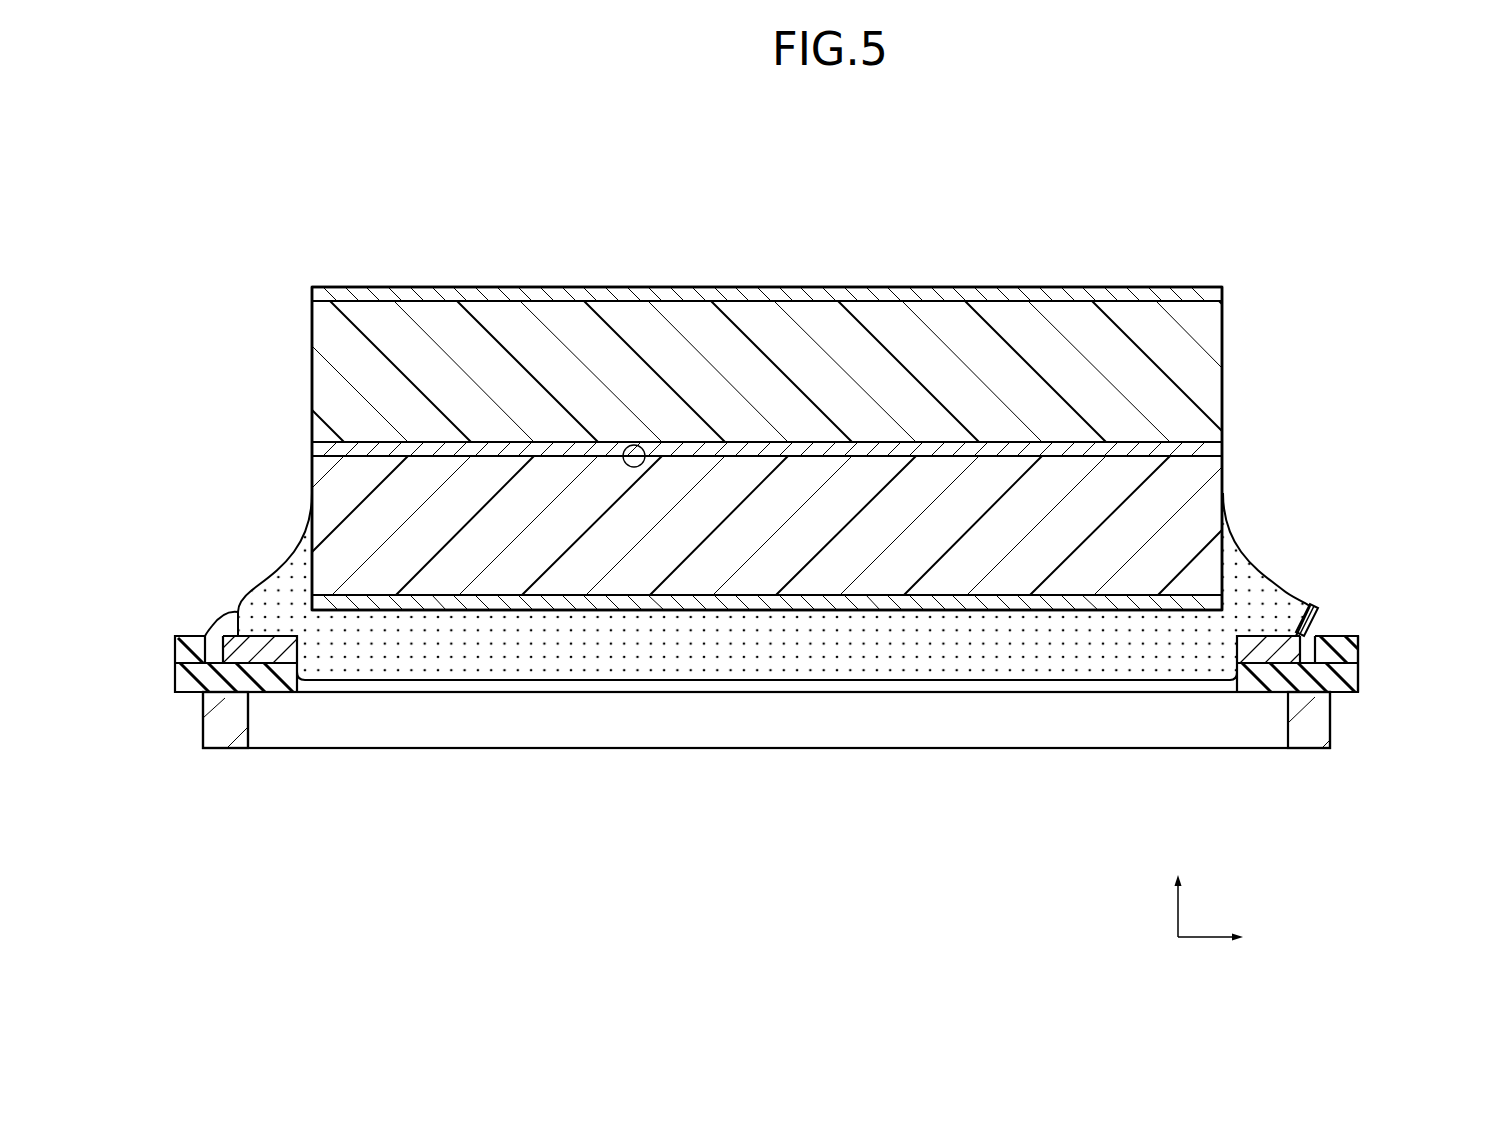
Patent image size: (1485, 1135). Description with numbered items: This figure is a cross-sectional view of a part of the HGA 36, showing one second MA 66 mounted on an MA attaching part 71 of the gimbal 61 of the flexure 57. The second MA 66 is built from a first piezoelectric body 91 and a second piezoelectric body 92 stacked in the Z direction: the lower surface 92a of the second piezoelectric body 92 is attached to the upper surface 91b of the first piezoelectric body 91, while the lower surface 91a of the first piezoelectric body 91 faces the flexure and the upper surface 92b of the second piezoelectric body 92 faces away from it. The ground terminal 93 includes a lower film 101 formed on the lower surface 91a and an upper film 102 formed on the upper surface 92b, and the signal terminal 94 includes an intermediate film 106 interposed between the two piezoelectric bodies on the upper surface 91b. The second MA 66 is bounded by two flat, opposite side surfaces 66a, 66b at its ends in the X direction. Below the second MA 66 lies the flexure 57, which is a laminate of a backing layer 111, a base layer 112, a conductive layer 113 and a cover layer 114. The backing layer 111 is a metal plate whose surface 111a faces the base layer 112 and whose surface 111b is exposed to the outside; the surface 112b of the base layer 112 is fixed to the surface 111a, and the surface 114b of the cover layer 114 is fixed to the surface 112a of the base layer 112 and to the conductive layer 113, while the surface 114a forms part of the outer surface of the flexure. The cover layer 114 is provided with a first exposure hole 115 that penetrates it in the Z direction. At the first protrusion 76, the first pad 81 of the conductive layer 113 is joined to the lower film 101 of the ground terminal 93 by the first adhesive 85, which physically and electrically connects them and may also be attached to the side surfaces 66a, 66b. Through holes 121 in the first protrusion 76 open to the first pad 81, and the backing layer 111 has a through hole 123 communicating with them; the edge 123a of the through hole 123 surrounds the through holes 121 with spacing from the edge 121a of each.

The HGA 36 is at (272, 118).
The second MA 66 is at (915, 282).
The side surface 66a is at (1225, 320).
The side surface 66b is at (310, 320).
The second piezoelectric body 92 is at (742, 345).
The lower surface 92a is at (633, 445).
The upper surface 92b is at (527, 302).
The ground terminal 93 is at (767, 248).
The upper film 102 is at (845, 295).
The signal terminal 94 is at (764, 325).
The intermediate film 106 is at (430, 445).
The first piezoelectric body 91 is at (1115, 485).
The lower surface 91a is at (992, 601).
The upper surface 91b is at (1018, 440).
The lower film 101 is at (790, 600).
The first adhesive 85 is at (278, 587).
The first pad 81 is at (227, 580).
The conductive layer 113 is at (265, 636).
The backing layer 111 is at (212, 723).
The surface 111a is at (212, 660).
The surface 111b is at (243, 750).
The cover layer 114 is at (173, 650).
The surface 114a is at (1345, 647).
The surface 114b is at (1360, 677).
The first exposure hole 115 is at (1280, 590).
The base layer 112 is at (1267, 693).
The surface 112a is at (1342, 657).
The surface 112b is at (1347, 693).
The through hole 121 is at (1105, 697).
The edge 121a is at (1213, 693).
The through hole 123 is at (650, 745).
The edge 123a is at (250, 725).
The flexure 57 is at (220, 813).
The gimbal 61 is at (220, 813).
The MA attaching part 71 is at (220, 813).
The first protrusion 76 is at (224, 755).